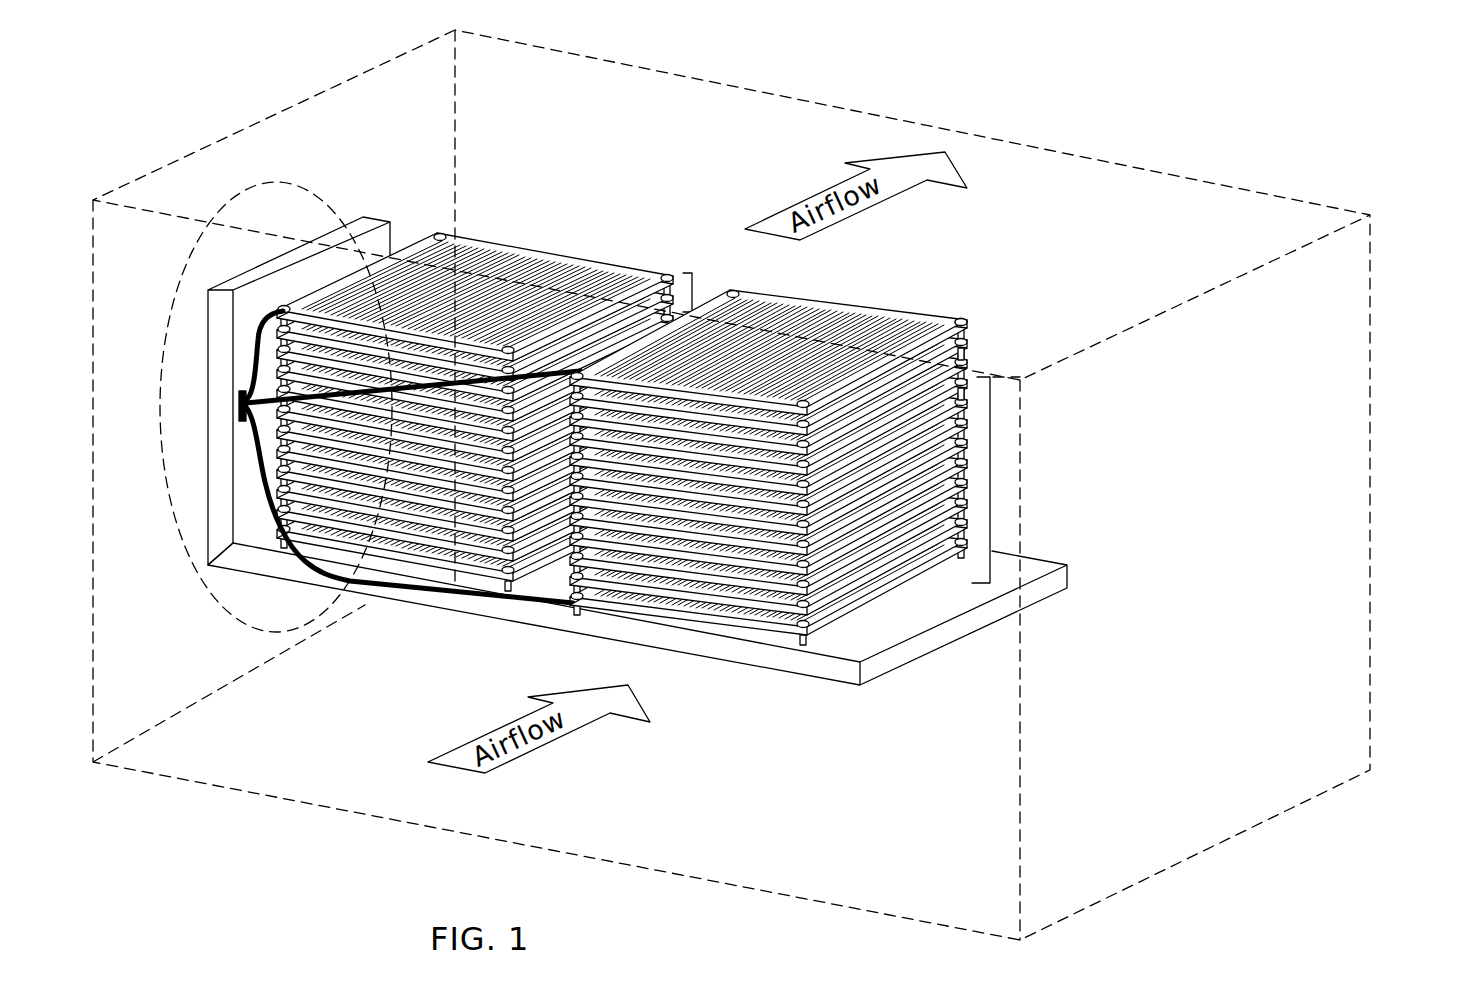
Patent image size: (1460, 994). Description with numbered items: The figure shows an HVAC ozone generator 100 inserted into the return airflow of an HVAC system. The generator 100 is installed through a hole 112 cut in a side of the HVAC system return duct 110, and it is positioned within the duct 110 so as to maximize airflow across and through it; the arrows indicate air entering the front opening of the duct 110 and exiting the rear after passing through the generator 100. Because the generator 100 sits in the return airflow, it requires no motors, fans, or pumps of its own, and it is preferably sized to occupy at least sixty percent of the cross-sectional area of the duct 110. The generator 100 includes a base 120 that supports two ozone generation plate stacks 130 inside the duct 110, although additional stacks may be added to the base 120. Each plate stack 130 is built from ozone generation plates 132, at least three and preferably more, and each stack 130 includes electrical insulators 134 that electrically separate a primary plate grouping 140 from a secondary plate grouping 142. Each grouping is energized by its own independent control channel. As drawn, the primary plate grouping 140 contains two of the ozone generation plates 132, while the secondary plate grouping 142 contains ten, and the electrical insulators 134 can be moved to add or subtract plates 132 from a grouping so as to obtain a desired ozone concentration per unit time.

The HVAC ozone generator 100 is at (712, 217).
The HVAC system return duct 110 is at (1333, 313).
The hole 112 is at (300, 182).
The base 120 is at (222, 505).
The ozone generation plate stack 130 is at (606, 410).
The ozone generation plate 132 is at (972, 405).
The electrical insulator 134 is at (982, 366).
The primary plate grouping 140 is at (697, 293).
The secondary plate grouping 142 is at (992, 462).